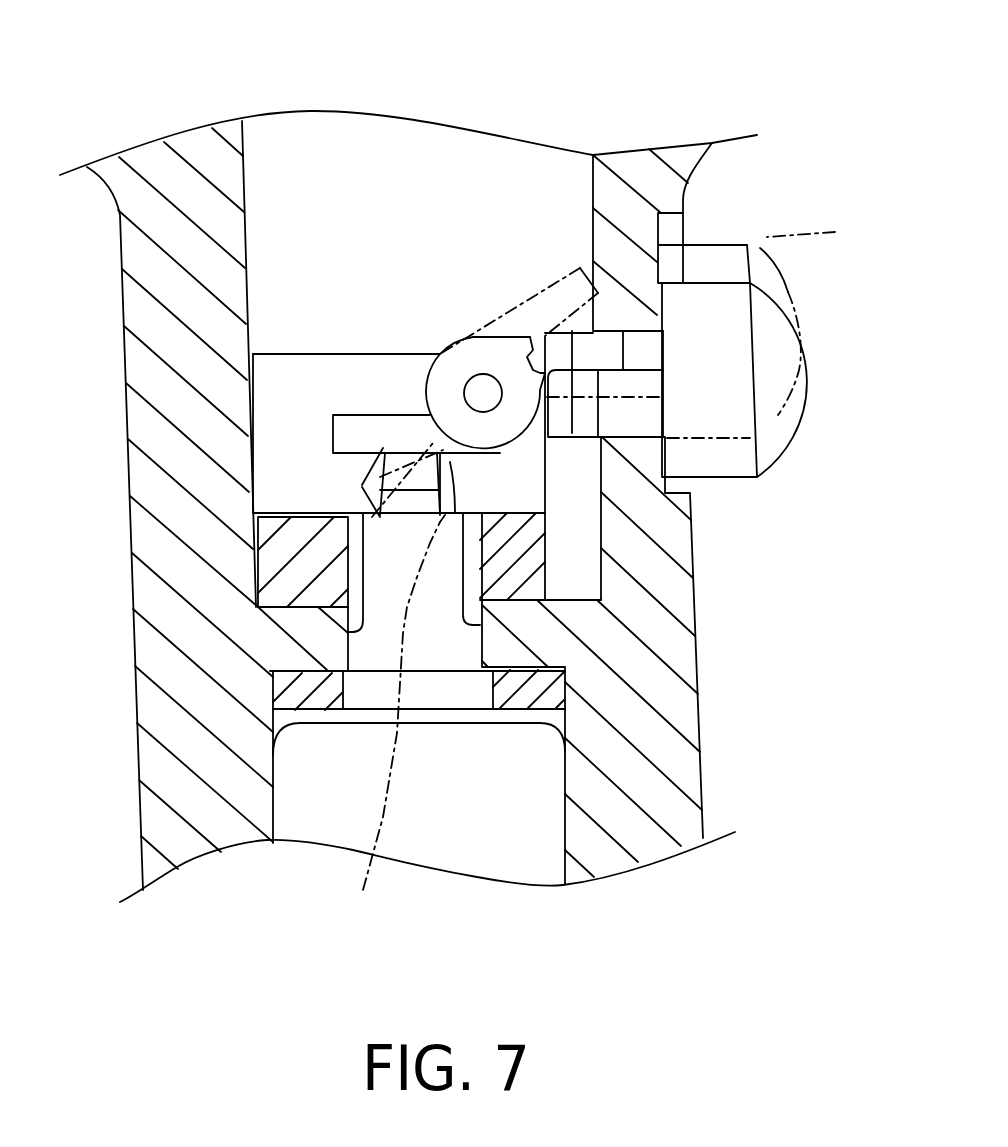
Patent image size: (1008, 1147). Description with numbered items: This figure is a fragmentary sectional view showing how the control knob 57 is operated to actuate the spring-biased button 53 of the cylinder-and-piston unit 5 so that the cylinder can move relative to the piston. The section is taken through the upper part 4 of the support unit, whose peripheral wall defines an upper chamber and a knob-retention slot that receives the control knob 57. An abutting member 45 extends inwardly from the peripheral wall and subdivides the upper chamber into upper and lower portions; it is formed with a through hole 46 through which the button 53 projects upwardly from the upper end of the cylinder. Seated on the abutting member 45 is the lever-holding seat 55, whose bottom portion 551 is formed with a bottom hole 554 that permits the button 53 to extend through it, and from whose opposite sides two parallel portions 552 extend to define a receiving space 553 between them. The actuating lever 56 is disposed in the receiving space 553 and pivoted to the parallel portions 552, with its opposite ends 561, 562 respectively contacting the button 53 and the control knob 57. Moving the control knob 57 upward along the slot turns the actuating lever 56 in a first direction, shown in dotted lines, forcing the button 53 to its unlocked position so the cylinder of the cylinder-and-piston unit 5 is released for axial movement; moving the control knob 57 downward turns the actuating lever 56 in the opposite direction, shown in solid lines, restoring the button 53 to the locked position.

The upper part 4 is at (678, 713).
The cylinder-and-piston unit 5 is at (550, 802).
The abutting member 45 is at (313, 648).
The through hole 46 is at (468, 634).
The spring-biased button 53 is at (312, 608).
The lever-holding seat 55 is at (313, 350).
The bottom portion 551 is at (290, 548).
The parallel portions 552 is at (273, 373).
The receiving space 553 is at (375, 397).
The bottom hole 554 is at (458, 545).
The actuating lever 56 is at (524, 322).
The end of actuating lever 561 is at (353, 433).
The end of actuating lever 562 is at (567, 295).
The control knob 57 is at (888, 262).